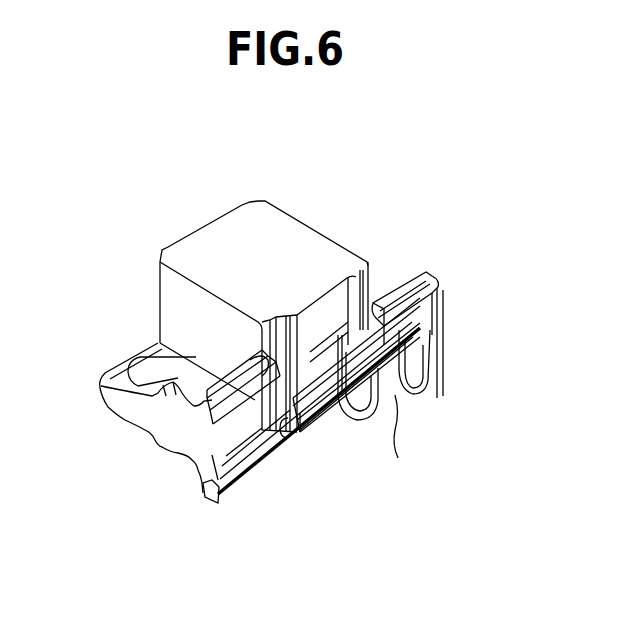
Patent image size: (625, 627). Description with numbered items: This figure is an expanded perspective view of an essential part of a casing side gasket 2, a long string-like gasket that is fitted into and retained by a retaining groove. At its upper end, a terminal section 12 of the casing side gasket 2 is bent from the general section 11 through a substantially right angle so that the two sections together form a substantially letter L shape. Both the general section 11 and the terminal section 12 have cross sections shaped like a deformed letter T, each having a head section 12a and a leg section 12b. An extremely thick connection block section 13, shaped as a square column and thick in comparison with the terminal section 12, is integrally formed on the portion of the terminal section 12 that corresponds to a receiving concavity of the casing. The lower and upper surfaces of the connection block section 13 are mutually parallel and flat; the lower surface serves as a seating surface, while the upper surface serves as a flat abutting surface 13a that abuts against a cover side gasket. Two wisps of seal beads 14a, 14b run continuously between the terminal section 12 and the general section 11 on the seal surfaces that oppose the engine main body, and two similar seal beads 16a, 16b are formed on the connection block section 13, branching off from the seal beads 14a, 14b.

The casing side gasket 2 is at (449, 340).
The general section 11 is at (408, 394).
The terminal section 12 is at (268, 472).
The head section 12a is at (220, 503).
The leg section 12b is at (120, 402).
The connection block section 13 is at (176, 303).
The flat abutting surface 13a is at (282, 219).
The seal bead 14a is at (438, 294).
The seal bead 14b is at (333, 413).
The seal bead 16a is at (288, 373).
The seal bead 16b is at (360, 418).